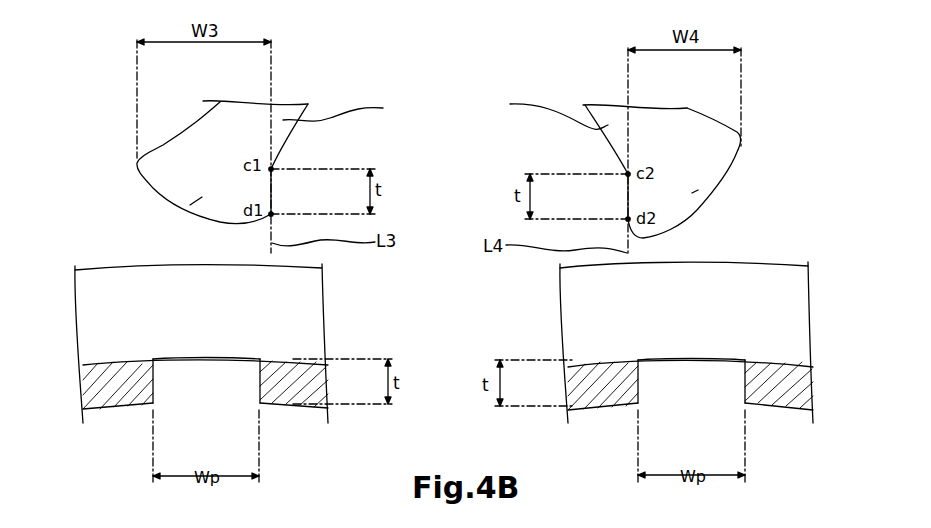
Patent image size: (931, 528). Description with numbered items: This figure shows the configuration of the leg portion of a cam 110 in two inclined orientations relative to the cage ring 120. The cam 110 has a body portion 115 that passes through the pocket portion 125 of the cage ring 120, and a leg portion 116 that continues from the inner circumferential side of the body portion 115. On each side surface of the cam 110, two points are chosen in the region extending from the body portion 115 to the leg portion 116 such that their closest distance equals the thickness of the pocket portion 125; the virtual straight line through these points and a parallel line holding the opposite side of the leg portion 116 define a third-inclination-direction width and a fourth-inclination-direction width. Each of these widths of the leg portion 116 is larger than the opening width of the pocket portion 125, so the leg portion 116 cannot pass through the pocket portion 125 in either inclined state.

The cam 110 is at (153, 187).
The body portion 115 is at (445, 110).
The leg portion 116 is at (200, 198).
The cage ring 120 is at (126, 270).
The pocket portion 125 is at (213, 387).